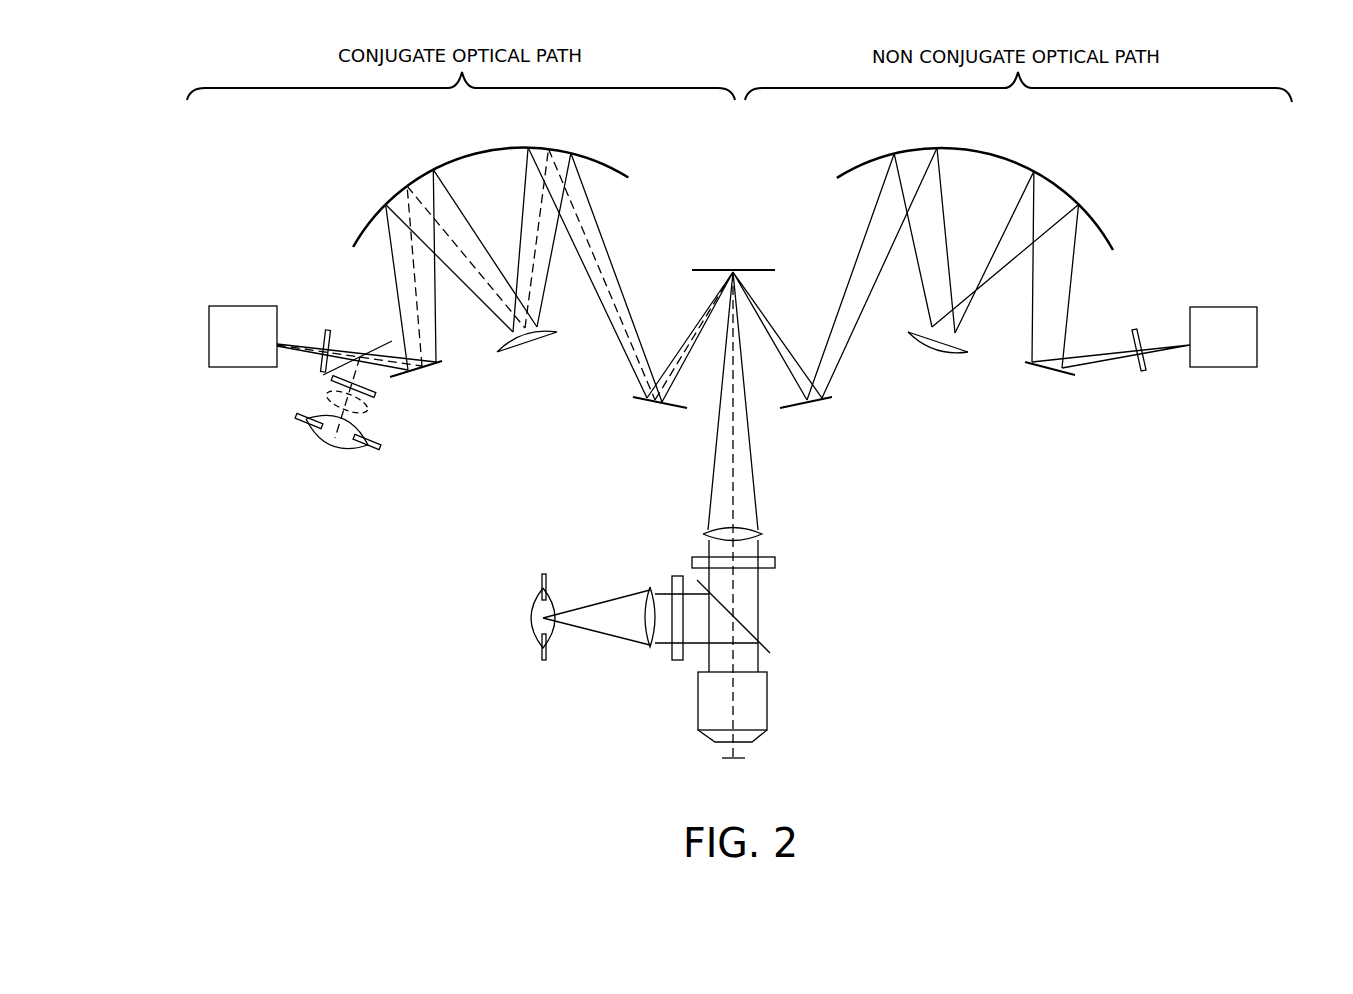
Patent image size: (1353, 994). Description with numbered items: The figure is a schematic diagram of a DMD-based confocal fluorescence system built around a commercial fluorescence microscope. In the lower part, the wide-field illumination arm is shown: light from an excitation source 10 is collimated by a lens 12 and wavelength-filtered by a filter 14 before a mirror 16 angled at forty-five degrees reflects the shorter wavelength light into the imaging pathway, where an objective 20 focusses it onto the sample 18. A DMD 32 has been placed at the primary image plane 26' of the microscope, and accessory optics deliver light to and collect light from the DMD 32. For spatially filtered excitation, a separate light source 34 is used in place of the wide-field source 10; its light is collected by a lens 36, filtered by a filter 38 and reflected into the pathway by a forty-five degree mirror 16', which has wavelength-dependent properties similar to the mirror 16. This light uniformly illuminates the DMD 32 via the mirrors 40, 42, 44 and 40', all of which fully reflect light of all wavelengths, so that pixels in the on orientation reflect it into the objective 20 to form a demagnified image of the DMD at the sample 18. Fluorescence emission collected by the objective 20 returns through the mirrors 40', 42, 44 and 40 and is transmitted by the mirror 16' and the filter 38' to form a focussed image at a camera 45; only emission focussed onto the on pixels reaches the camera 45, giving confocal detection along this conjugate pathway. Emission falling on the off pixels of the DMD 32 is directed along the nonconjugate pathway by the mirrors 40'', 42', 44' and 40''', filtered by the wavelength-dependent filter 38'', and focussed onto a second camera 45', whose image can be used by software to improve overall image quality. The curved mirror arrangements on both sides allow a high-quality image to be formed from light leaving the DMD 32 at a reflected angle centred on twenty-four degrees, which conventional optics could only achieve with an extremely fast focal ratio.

The excitation source 10 is at (532, 615).
The lens 12 is at (645, 647).
The filter 14 is at (679, 575).
The mirror 16 is at (748, 616).
The mirror 16' is at (357, 339).
The sample 18 is at (743, 760).
The objective 20 is at (768, 700).
The primary image plane 26' is at (745, 248).
The DMD 32 is at (720, 251).
The light source 34 is at (323, 442).
The lens 36 is at (370, 410).
The filter 38 is at (378, 390).
The filter 38' is at (309, 335).
The filter 38'' is at (1114, 342).
The mirror 40 is at (425, 384).
The mirror 40' is at (660, 424).
The mirror 40'' is at (806, 424).
The mirror 40''' is at (1040, 386).
The mirror 42 is at (490, 178).
The mirror 42' is at (975, 180).
The mirror 44 is at (527, 360).
The mirror 44' is at (938, 359).
The camera 45 is at (243, 312).
The camera 45' is at (1223, 312).